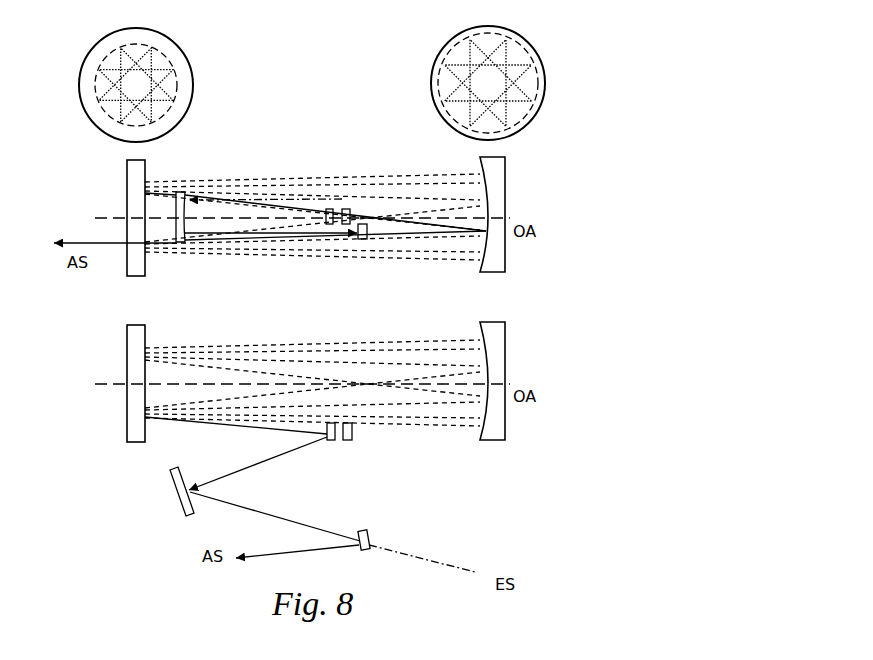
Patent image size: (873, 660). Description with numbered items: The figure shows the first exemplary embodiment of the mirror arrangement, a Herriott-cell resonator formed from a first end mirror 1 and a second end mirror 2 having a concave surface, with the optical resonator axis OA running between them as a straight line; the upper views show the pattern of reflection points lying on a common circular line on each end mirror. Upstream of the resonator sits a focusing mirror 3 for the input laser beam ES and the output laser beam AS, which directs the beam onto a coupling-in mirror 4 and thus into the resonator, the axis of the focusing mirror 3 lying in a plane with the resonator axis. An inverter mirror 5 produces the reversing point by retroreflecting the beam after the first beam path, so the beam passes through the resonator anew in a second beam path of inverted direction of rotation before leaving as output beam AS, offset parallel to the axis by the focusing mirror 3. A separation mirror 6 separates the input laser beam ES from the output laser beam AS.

The first end mirror 1 is at (170, 50).
The second end mirror 2 is at (448, 47).
The focusing mirror 3 is at (179, 489).
The coupling-in mirror 4 is at (331, 440).
The inverter mirror 5 is at (347, 440).
The separation mirror 6 is at (370, 532).